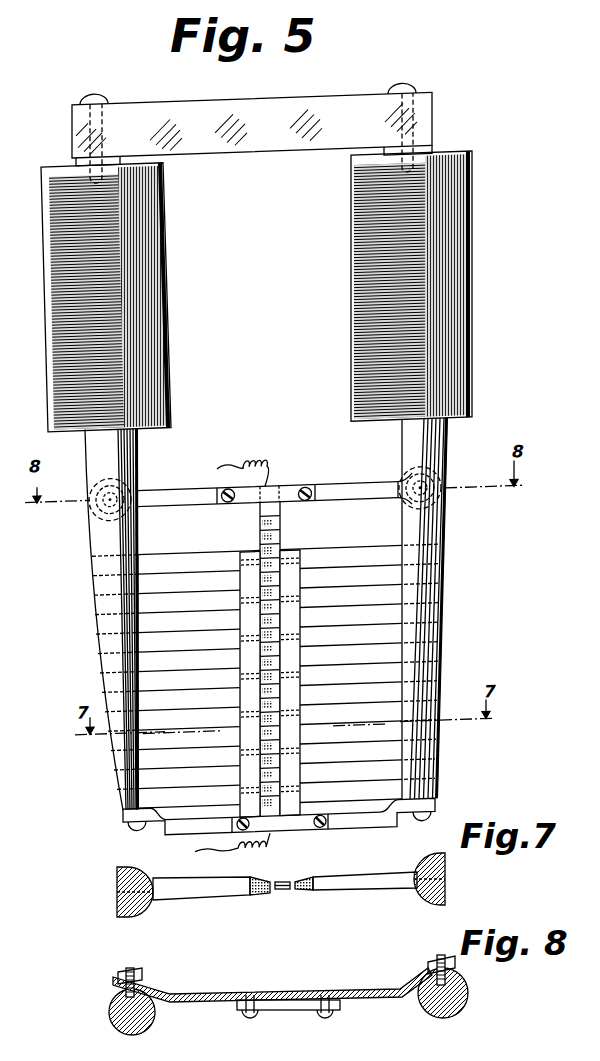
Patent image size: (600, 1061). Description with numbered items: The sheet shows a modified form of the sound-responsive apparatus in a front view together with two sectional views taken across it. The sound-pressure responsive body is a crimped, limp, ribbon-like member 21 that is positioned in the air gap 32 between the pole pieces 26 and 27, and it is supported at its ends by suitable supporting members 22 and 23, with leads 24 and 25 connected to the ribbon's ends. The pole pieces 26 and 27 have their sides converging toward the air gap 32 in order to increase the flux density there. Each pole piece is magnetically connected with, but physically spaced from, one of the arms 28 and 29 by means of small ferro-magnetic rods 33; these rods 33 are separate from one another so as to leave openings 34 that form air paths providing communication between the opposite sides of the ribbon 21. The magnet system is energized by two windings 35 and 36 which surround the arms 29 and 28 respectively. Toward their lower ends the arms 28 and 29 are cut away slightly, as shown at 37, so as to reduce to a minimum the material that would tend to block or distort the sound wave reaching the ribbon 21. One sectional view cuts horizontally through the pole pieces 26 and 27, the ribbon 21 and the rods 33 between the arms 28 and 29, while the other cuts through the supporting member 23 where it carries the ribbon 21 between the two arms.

In FIG. 5, the ribbon-like member 21 is at (281, 525).
In FIG. 7, the ribbon-like member 21 is at (285, 893).
In FIG. 8, the ribbon-like member 21 is at (280, 1012).
In FIG. 5, the supporting member 22 is at (300, 823).
In FIG. 5, the supporting member 23 is at (285, 491).
In FIG. 8, the supporting member 23 is at (280, 998).
In FIG. 5, the lead 24 is at (243, 847).
In FIG. 5, the lead 25 is at (245, 461).
In FIG. 5, the pole piece 26 is at (289, 550).
In FIG. 7, the pole piece 26 is at (313, 893).
In FIG. 5, the pole piece 27 is at (247, 550).
In FIG. 7, the pole piece 27 is at (262, 898).
In FIG. 5, the arm 28 is at (447, 460).
In FIG. 7, the arm 28 is at (430, 905).
In FIG. 8, the arm 28 is at (437, 1020).
In FIG. 5, the arm 29 is at (92, 448).
In FIG. 7, the arm 29 is at (143, 905).
In FIG. 8, the arm 29 is at (148, 1028).
In FIG. 5, the air gap 32 is at (263, 761).
In FIG. 5, the ferro-magnetic rods 33 is at (165, 560).
In FIG. 7, the ferro-magnetic rods 33 is at (382, 885).
In FIG. 5, the openings 34 is at (347, 577).
In FIG. 5, the winding 35 is at (172, 326).
In FIG. 5, the winding 36 is at (357, 292).
In FIG. 5, the cut-away portion 37 is at (105, 688).